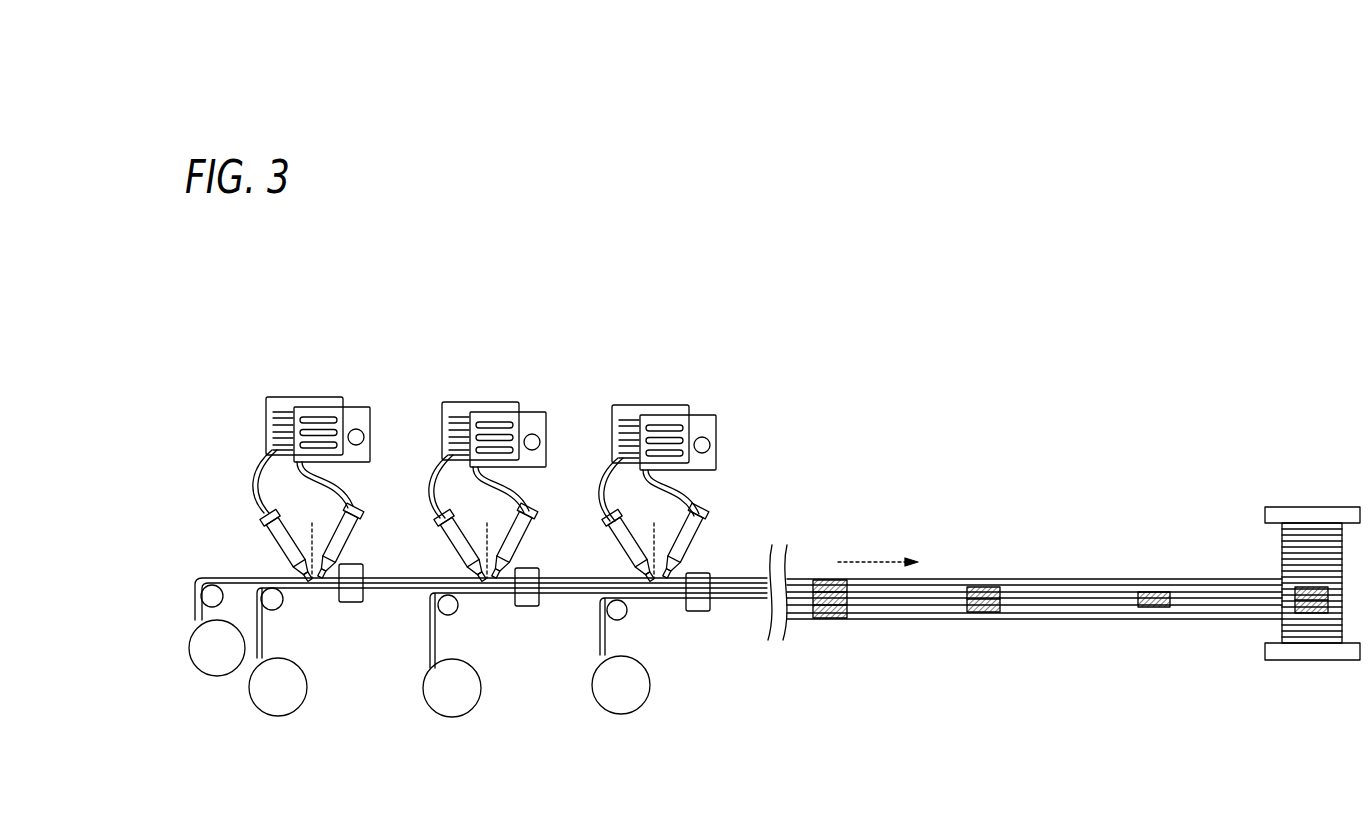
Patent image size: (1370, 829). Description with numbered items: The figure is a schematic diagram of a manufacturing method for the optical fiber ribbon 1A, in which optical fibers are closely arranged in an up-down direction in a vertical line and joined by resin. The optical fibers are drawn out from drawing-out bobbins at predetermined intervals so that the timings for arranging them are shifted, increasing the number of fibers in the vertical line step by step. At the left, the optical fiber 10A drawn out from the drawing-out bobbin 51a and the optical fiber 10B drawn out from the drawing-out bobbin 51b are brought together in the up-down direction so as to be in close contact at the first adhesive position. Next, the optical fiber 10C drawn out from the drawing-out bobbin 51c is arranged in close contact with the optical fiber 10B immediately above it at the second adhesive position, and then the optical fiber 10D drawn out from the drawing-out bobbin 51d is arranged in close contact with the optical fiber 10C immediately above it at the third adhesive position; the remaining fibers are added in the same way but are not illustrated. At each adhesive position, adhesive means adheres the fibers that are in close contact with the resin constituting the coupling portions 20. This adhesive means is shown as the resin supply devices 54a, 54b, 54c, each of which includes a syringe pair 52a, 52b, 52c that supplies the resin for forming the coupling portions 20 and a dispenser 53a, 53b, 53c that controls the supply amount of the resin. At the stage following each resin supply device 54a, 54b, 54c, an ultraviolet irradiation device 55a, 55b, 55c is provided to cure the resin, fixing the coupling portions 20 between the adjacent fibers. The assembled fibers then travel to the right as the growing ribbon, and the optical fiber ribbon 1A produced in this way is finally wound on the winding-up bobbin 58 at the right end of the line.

The optical fiber ribbon 1A is at (1030, 567).
The optical fiber 10A is at (193, 608).
The optical fiber 10B is at (263, 635).
The optical fiber 10C is at (437, 635).
The optical fiber 10D is at (607, 640).
The coupling portion 20 is at (318, 590).
The drawing-out bobbin 51a is at (203, 675).
The drawing-out bobbin 51b is at (303, 700).
The drawing-out bobbin 51c is at (477, 705).
The drawing-out bobbin 51d is at (645, 705).
The syringe pair 52a is at (265, 530).
The syringe pair 52b is at (452, 548).
The syringe pair 52c is at (622, 545).
The dispenser 53a is at (265, 423).
The dispenser 53b is at (442, 428).
The dispenser 53c is at (612, 432).
The resin supply device 54a is at (323, 385).
The resin supply device 54b is at (508, 387).
The resin supply device 54c is at (665, 389).
The ultraviolet irradiation device 55a is at (360, 560).
The ultraviolet irradiation device 55b is at (527, 563).
The ultraviolet irradiation device 55c is at (700, 562).
The winding-up bobbin 58 is at (1288, 660).